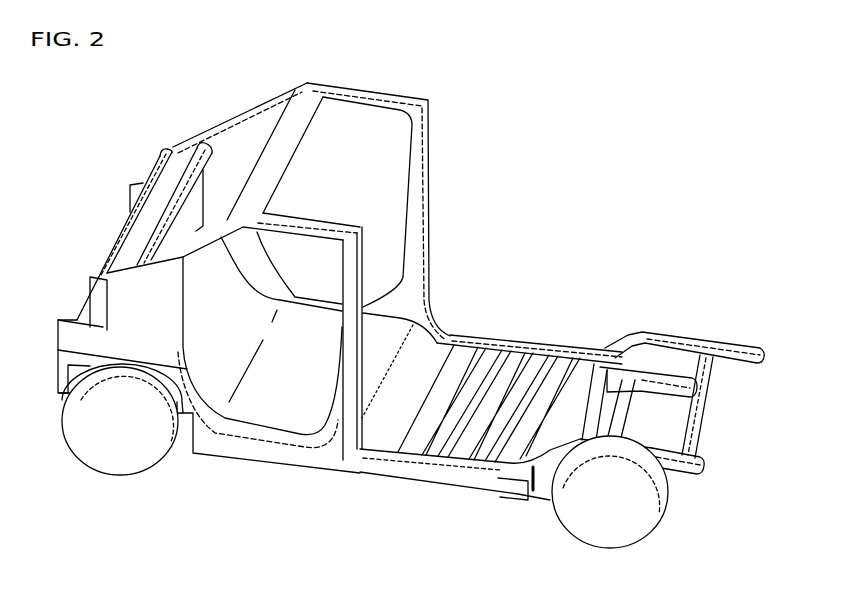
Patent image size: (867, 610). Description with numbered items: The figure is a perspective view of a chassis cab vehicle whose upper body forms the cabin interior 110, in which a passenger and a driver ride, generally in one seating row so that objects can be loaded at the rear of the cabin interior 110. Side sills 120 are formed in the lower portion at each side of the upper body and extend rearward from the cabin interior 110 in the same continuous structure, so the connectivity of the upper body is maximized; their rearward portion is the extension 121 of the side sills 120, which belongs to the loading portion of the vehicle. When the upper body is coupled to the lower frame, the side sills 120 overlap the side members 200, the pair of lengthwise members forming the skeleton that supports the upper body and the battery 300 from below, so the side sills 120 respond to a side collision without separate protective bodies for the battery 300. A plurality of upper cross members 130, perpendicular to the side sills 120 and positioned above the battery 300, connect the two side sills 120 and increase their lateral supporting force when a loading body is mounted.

The cabin interior 110 is at (277, 410).
The side sill 120 is at (203, 443).
The extension of the side sills 121 is at (568, 358).
The upper cross member 130 is at (560, 367).
The side member 200 is at (697, 346).
The battery 300 is at (383, 427).